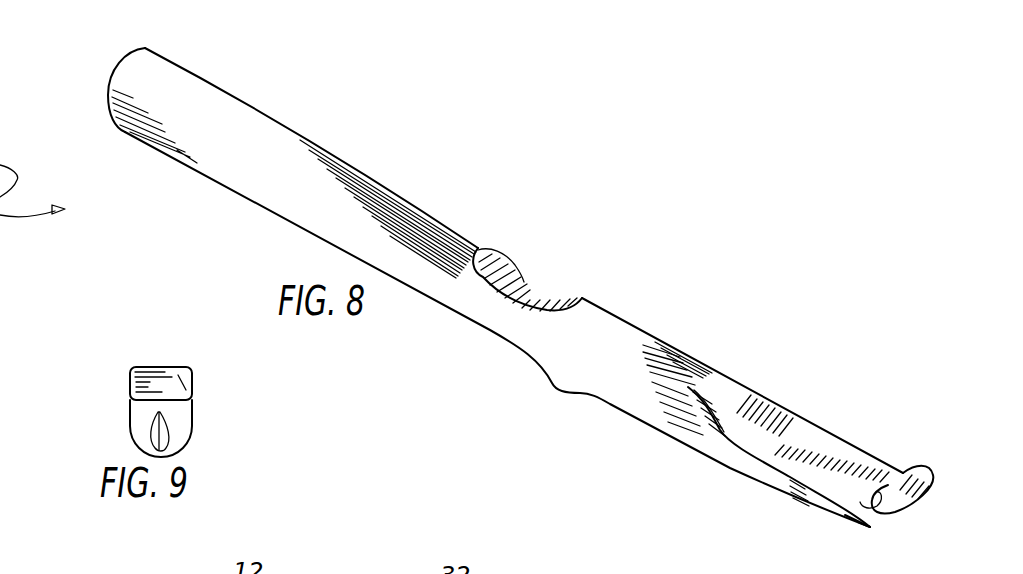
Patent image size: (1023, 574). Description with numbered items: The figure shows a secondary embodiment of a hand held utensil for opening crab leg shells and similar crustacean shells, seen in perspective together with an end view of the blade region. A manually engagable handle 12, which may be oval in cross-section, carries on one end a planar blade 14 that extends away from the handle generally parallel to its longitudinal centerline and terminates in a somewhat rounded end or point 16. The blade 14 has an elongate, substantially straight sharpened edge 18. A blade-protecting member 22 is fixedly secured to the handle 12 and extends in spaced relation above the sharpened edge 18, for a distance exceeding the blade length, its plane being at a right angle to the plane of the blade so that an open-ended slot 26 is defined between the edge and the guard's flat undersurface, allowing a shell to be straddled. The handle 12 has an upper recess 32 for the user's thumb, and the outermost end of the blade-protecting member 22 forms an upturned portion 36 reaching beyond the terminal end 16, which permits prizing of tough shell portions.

In FIG. 8, the handle 12 is at (287, 155).
In FIG. 8, the recess 32 is at (528, 285).
In FIG. 8, the blade-protecting member 22 is at (807, 433).
In FIG. 8, the upturned portion 36 is at (920, 470).
In FIG. 8, the planar blade 14 is at (748, 468).
In FIG. 8, the open-ended slot 26 is at (788, 475).
In FIG. 8, the terminal end 16 is at (872, 527).
In FIG. 9, the sharpened edge 18 is at (160, 410).